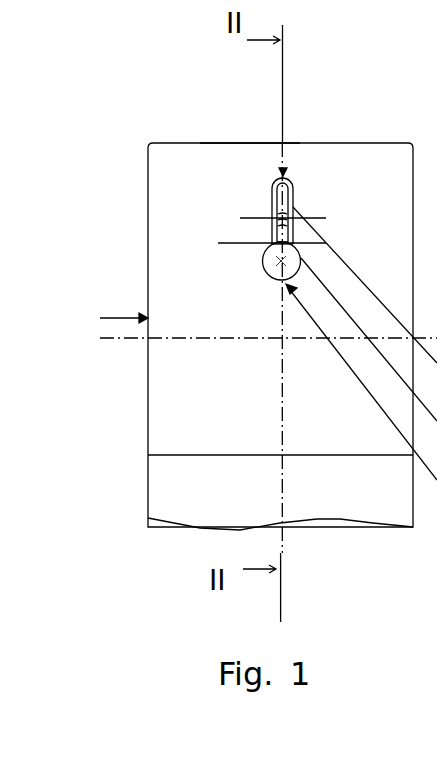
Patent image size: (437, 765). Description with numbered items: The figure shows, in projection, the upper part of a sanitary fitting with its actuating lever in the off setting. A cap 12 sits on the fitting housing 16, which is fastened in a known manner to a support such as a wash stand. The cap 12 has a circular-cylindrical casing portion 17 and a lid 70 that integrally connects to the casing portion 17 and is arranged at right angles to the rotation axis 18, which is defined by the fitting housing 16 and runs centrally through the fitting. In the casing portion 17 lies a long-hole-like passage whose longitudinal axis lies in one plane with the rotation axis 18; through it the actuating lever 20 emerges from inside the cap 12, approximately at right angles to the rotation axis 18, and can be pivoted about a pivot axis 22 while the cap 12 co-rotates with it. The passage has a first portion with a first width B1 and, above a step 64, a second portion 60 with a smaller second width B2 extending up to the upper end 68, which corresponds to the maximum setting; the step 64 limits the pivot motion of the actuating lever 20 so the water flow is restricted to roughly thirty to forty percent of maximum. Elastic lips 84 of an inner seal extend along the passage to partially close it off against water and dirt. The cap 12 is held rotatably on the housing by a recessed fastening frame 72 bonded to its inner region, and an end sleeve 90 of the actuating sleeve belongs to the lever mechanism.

The cap 12 is at (148, 141).
The lid 70 is at (232, 142).
The rotation axis 18 is at (280, 133).
The fitting housing 16 is at (160, 501).
The casing portion 17 is at (107, 323).
The pivot axis 22 is at (125, 338).
The actuating lever 20 is at (270, 258).
The lips 84 is at (273, 187).
The second portion 60 is at (277, 207).
The step 64 is at (272, 240).
The end sleeve 90 is at (272, 268).
The upper end 68 is at (286, 173).
The second width B2 is at (275, 216).
The first width B1 is at (297, 244).
The fastening frame 72 is at (361, 279).